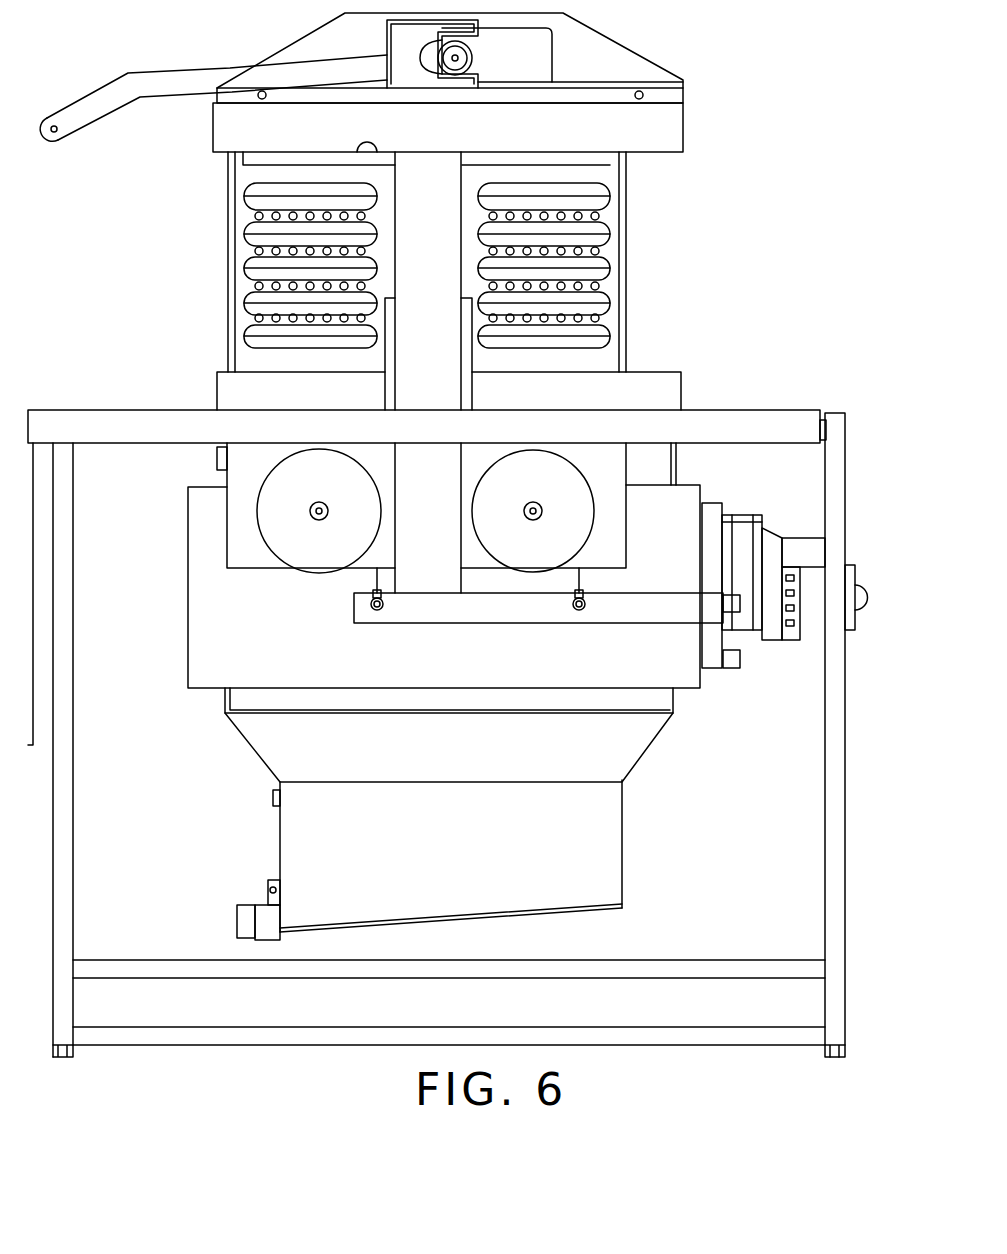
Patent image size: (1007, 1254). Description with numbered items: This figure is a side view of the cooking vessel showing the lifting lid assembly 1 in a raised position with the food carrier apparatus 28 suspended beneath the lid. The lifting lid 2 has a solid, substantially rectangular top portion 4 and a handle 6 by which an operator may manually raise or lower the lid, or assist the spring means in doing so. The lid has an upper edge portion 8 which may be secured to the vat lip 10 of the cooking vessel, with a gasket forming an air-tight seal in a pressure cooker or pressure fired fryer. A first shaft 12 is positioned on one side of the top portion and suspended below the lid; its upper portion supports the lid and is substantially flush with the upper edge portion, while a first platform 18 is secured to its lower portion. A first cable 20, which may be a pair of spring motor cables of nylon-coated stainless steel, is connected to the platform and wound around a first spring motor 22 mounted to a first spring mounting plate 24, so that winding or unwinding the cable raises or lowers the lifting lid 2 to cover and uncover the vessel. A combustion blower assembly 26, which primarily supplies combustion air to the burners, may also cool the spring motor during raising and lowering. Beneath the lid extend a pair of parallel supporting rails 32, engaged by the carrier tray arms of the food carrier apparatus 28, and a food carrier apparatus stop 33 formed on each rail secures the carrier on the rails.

The lifting lid assembly 1 is at (851, 94).
The lifting lid 2 is at (665, 50).
The top portion 4 is at (675, 76).
The handle 6 is at (78, 100).
The upper edge portion 8 is at (647, 371).
The vat lip 10 is at (788, 408).
The first shaft 12 is at (407, 386).
The first platform 18 is at (513, 585).
The first cable 20 is at (367, 578).
The first spring motor 22 is at (278, 535).
The first spring mounting plate 24 is at (240, 477).
The combustion blower assembly 26 is at (855, 580).
The food carrier apparatus 28 is at (217, 284).
The supporting rails 32 is at (605, 168).
The food carrier apparatus stop 33 is at (367, 156).